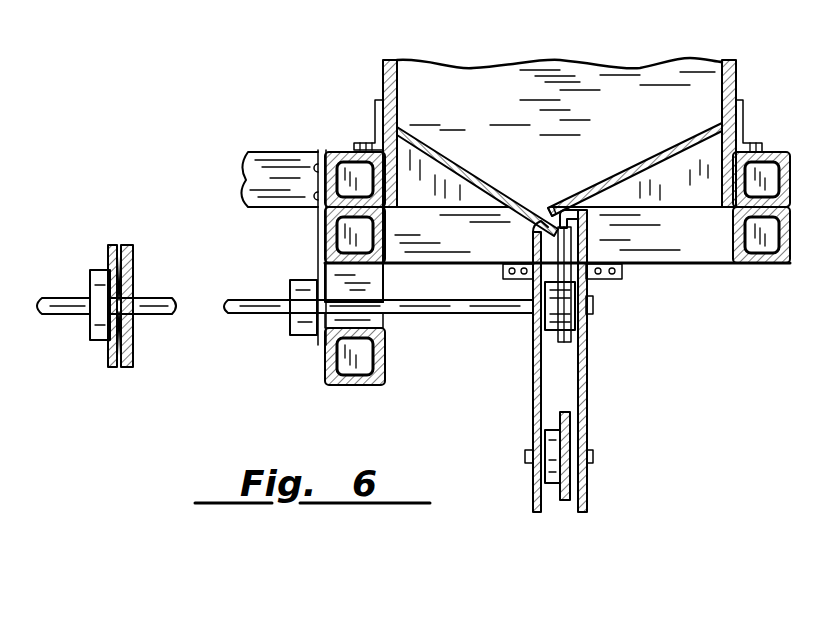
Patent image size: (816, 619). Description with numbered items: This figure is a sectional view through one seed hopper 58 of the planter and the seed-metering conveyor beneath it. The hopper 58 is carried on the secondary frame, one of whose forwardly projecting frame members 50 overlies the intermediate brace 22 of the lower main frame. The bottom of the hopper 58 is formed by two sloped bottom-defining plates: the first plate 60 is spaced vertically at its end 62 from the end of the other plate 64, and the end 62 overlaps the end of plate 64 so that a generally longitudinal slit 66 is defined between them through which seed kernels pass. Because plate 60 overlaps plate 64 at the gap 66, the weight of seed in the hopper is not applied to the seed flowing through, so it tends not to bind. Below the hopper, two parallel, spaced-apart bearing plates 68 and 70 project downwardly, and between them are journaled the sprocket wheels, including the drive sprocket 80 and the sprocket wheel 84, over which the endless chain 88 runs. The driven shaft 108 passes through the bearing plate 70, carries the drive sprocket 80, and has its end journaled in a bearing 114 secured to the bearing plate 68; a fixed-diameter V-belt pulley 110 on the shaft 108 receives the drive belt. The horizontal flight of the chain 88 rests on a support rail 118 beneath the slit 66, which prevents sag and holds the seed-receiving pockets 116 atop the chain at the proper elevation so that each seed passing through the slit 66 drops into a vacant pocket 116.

The seed hopper 58 is at (562, 62).
The frame member 50 is at (343, 152).
The bottom-defining plate 64 is at (437, 152).
The bottom-defining plate 60 is at (678, 147).
The longitudinal slit 66 is at (540, 207).
The end of bottom plate 62 is at (552, 210).
The endless chain 88 is at (540, 238).
The seed-receiving pocket 116 is at (587, 233).
The intermediate brace 22 is at (363, 264).
The support rail 118 is at (515, 275).
The driven shaft 108 is at (265, 315).
The drive sprocket wheel 80 is at (552, 316).
The bearing 114 is at (588, 318).
The bearing plate 70 is at (533, 399).
The bearing plate 68 is at (588, 399).
The sprocket wheel 84 is at (553, 483).
The V-belt pulley 110 is at (98, 342).